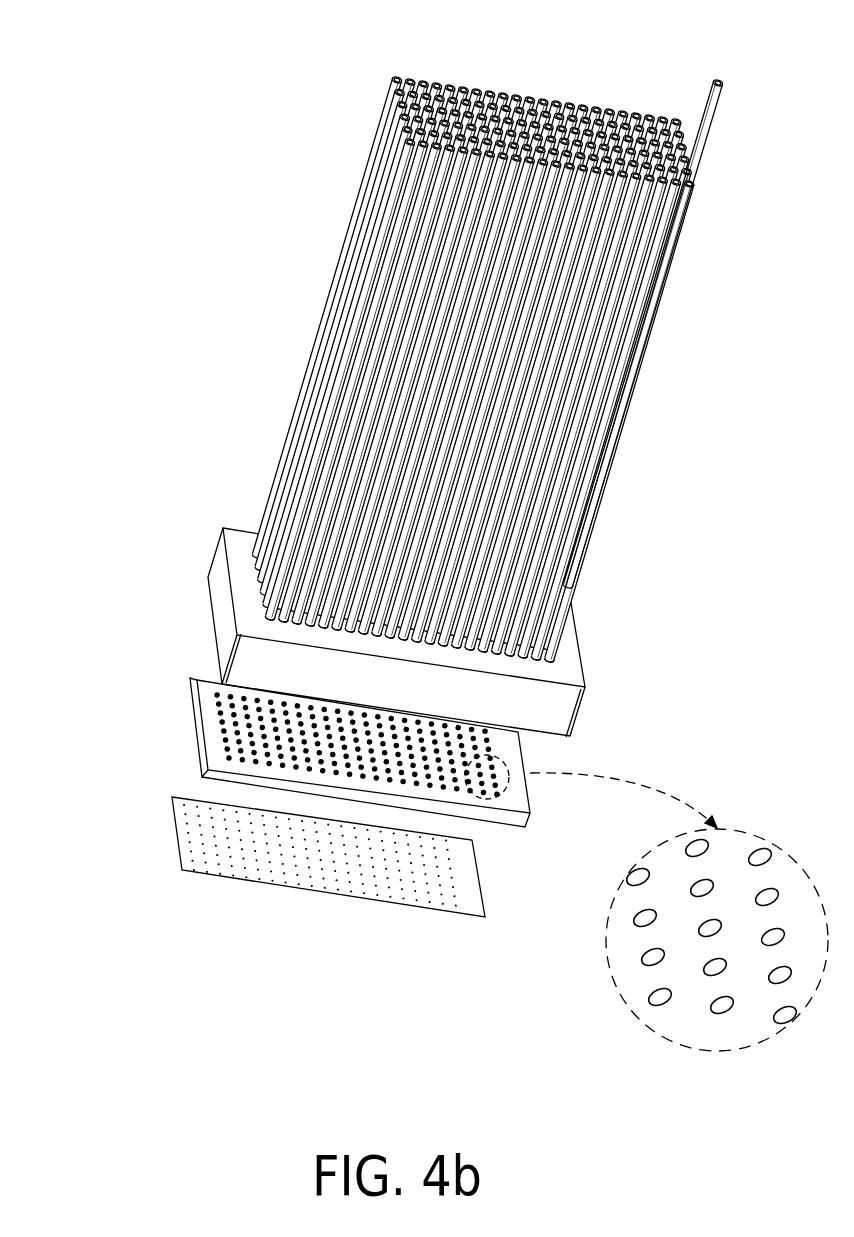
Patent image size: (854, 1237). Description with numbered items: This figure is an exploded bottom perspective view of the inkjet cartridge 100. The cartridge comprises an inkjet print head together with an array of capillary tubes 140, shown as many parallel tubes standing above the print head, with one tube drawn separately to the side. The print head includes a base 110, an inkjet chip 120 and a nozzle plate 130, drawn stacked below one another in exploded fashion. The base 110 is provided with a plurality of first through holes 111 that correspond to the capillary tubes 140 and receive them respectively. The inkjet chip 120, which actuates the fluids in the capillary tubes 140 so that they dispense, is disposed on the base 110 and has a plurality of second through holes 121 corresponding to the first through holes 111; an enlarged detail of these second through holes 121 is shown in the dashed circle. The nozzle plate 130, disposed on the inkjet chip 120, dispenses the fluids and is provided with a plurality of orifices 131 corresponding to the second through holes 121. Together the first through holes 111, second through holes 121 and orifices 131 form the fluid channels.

The inkjet cartridge 100 is at (80, 55).
The base 110 is at (570, 673).
The first through holes 111 is at (550, 657).
The inkjet chip 120 is at (513, 757).
The second through holes 121 is at (657, 993).
The nozzle plate 130 is at (473, 873).
The orifices 131 is at (460, 907).
The capillary tubes 140 is at (663, 272).